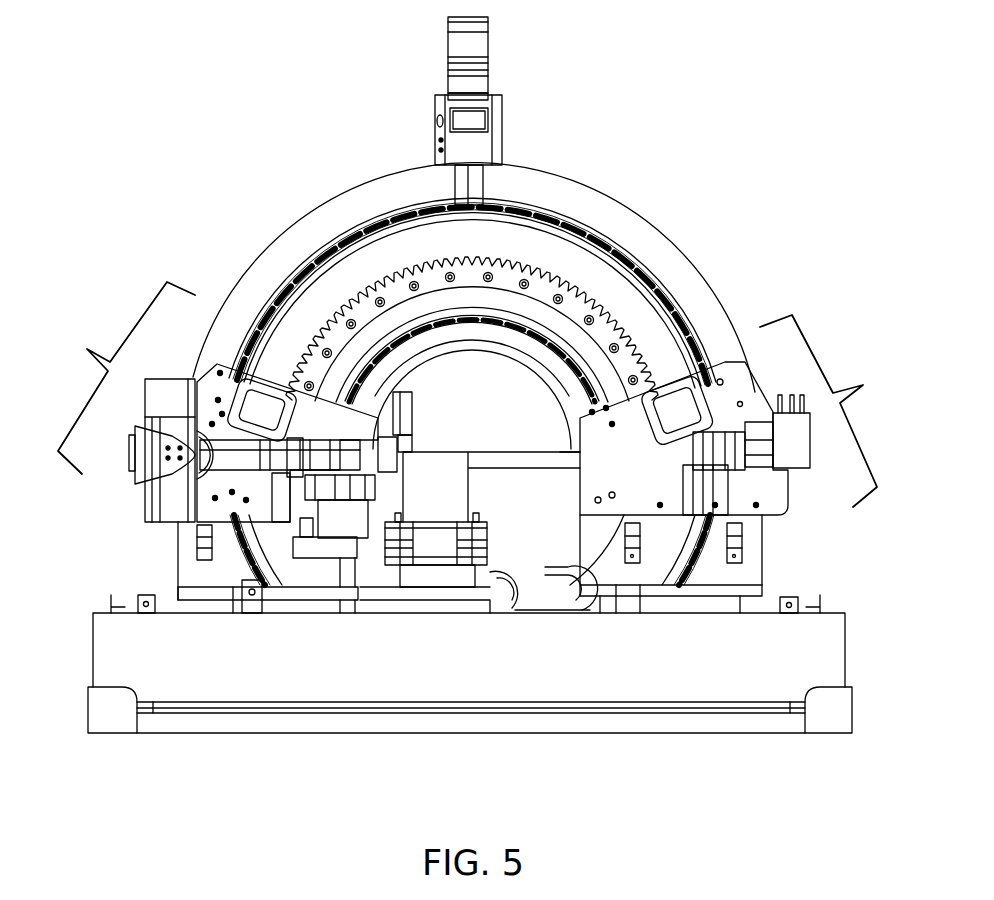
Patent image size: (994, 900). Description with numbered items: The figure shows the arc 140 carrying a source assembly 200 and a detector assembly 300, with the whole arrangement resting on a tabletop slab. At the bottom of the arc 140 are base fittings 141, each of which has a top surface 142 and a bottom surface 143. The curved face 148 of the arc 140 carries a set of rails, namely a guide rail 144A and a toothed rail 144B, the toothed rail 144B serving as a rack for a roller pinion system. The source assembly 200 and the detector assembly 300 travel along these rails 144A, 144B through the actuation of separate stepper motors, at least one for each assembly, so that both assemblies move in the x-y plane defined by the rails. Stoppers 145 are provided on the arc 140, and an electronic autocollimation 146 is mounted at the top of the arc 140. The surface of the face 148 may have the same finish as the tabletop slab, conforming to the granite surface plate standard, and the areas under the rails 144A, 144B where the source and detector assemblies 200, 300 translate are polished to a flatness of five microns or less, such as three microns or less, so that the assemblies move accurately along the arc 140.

The arc 140 is at (567, 192).
The base fittings 141 is at (185, 592).
The top surface 142 is at (195, 588).
The bottom surface 143 is at (207, 600).
The guide rail 144A is at (618, 243).
The toothed rail 144B is at (602, 333).
The stoppers 145 is at (742, 550).
The electronic autocollimation 146 is at (478, 43).
The face 148 is at (305, 225).
The source assembly 200 is at (217, 434).
The detector assembly 300 is at (737, 415).